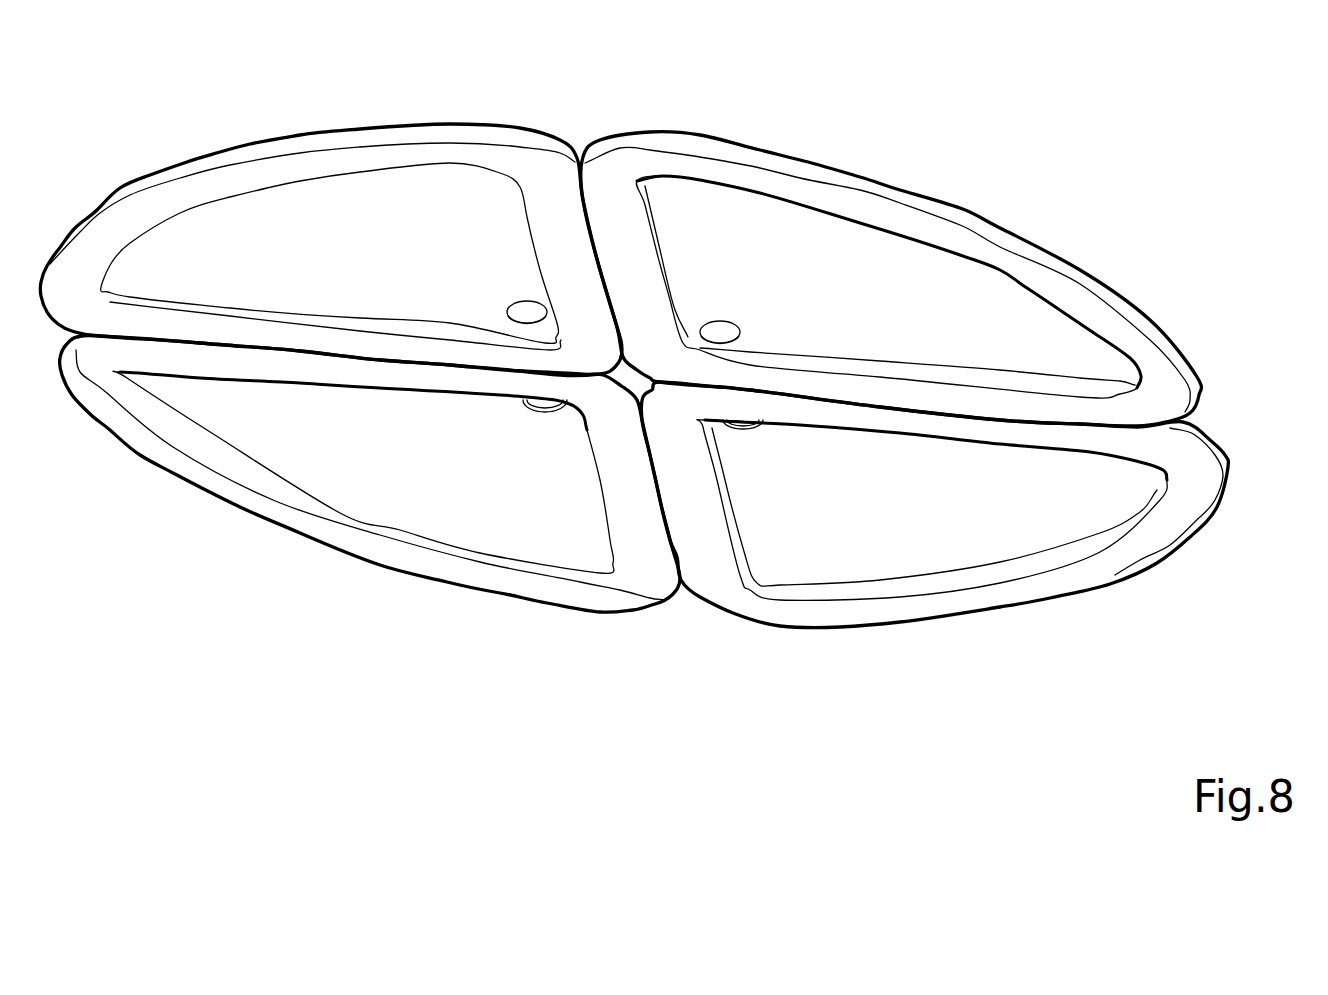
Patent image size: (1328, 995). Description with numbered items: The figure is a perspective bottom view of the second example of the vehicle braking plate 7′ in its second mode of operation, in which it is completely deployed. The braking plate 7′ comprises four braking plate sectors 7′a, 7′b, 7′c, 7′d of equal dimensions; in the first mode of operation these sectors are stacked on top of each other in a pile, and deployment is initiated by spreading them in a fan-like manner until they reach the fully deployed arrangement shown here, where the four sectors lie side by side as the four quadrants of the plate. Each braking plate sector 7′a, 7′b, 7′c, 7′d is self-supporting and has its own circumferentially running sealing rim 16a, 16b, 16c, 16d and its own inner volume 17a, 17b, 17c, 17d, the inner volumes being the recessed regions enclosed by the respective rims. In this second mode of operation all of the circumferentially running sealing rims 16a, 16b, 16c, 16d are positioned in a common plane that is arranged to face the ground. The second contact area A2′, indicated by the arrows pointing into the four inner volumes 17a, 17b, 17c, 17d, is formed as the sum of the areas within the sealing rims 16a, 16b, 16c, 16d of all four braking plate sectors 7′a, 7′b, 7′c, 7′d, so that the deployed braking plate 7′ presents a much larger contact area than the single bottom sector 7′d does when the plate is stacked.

The braking plate 7′ is at (194, 93).
The braking plate sector 7′a is at (717, 213).
The braking plate sector 7′b is at (395, 200).
The braking plate sector 7′c is at (346, 484).
The braking plate sector 7′d is at (943, 548).
The sealing rim 16a is at (890, 227).
The sealing rim 16b is at (498, 163).
The sealing rim 16c is at (222, 485).
The sealing rim 16d is at (817, 613).
The inner volume 17a is at (810, 240).
The inner volume 17b is at (280, 220).
The inner volume 17c is at (420, 505).
The inner volume 17d is at (860, 540).
The second contact area A2′ is at (472, 274).